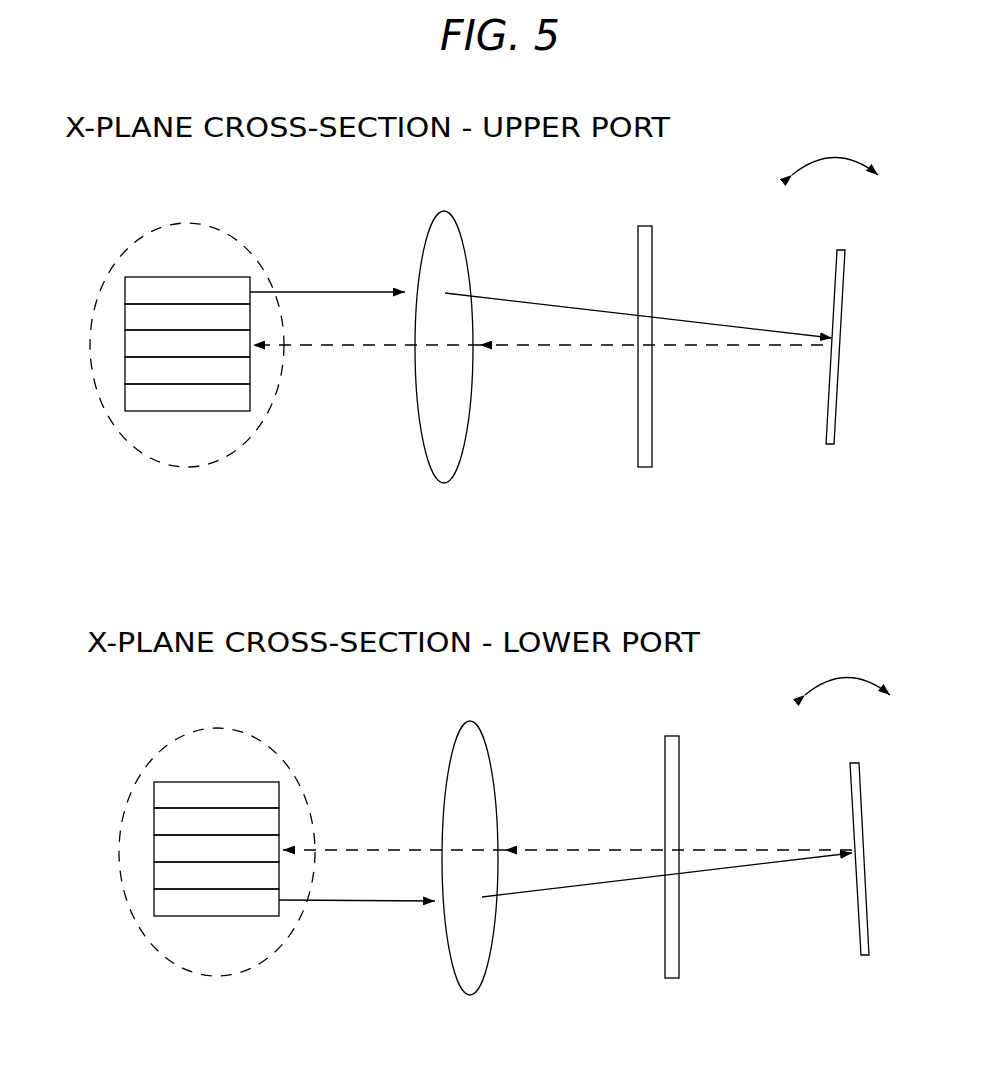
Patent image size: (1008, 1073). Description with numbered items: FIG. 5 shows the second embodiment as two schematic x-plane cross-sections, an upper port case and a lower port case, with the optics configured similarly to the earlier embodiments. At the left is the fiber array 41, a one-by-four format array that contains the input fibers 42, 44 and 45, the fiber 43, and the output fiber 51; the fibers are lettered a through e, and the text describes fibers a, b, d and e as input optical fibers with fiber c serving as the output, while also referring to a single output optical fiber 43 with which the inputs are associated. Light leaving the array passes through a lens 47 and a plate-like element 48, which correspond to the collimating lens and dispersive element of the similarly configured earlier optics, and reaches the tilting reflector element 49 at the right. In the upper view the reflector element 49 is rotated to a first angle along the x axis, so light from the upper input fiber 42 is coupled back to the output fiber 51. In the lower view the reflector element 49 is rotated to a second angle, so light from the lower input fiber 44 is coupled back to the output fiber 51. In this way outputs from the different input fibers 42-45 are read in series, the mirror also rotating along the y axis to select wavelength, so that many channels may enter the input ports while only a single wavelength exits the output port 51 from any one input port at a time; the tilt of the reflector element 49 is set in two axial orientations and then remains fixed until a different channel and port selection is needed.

The fiber array 41 is at (97, 300).
The upper input fiber 42 is at (180, 276).
The optical fiber 43 is at (250, 318).
The output fiber 51 is at (125, 340).
The lower input fiber 44 is at (250, 370).
The input fiber 45 is at (192, 411).
The lens 47 is at (462, 235).
The optical plate / filter 48 is at (648, 225).
The reflector element 49 is at (840, 250).